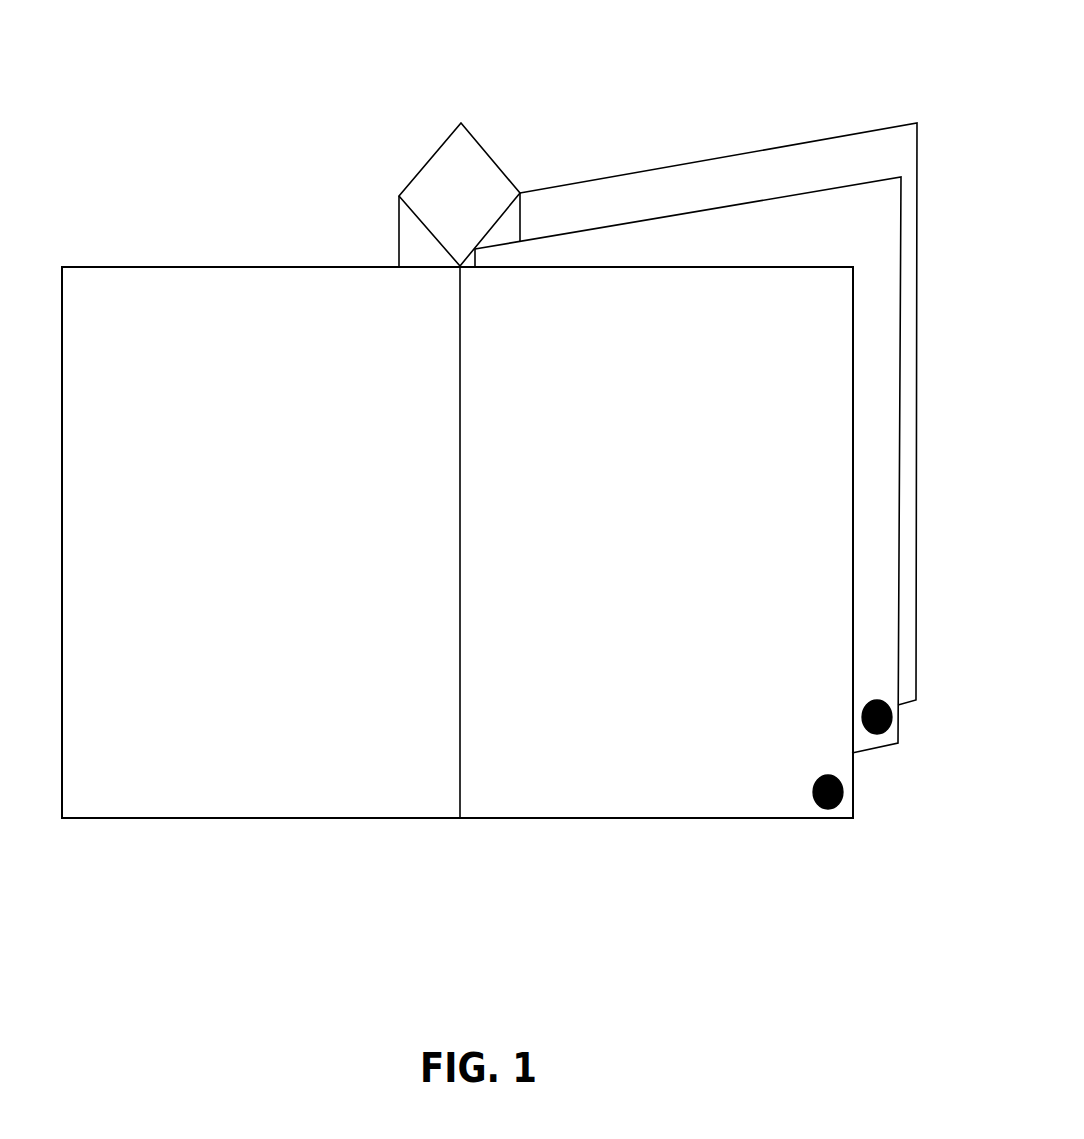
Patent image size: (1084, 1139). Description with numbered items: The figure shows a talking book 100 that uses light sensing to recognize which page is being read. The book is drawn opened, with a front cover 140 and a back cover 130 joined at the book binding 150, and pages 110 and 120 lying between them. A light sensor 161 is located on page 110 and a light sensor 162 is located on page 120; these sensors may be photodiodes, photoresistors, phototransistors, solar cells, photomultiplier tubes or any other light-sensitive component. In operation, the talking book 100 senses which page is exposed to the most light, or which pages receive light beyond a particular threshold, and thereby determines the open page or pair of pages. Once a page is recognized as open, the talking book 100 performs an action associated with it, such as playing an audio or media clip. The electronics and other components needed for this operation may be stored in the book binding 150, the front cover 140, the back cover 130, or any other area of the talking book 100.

The talking book 100 is at (270, 47).
The page 110 is at (705, 818).
The page 120 is at (638, 221).
The back cover 130 is at (638, 171).
The front cover 140 is at (255, 266).
The book binding 150 is at (476, 137).
The light sensor 161 is at (852, 818).
The light sensor 162 is at (873, 734).